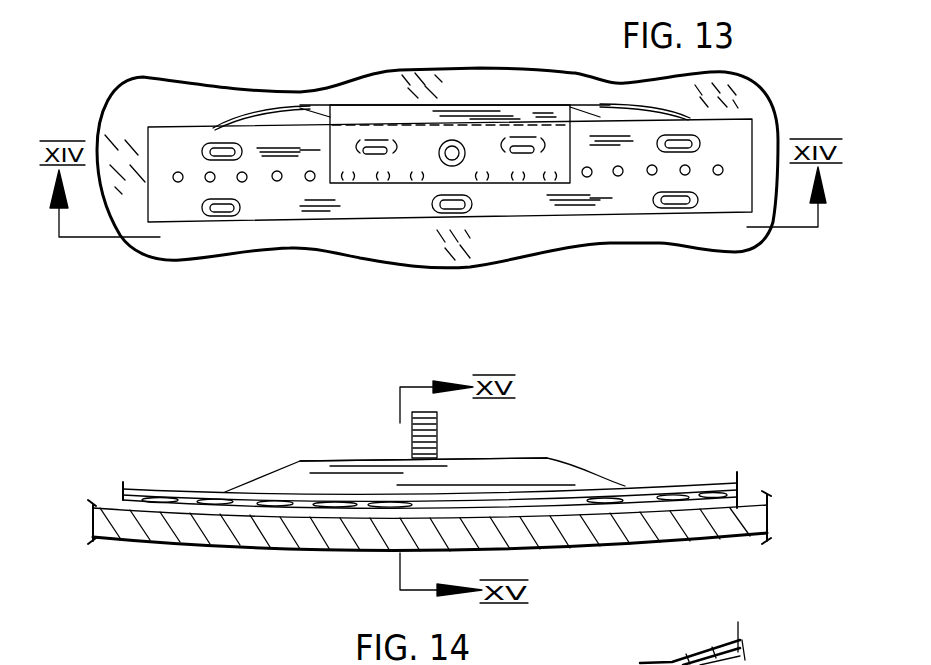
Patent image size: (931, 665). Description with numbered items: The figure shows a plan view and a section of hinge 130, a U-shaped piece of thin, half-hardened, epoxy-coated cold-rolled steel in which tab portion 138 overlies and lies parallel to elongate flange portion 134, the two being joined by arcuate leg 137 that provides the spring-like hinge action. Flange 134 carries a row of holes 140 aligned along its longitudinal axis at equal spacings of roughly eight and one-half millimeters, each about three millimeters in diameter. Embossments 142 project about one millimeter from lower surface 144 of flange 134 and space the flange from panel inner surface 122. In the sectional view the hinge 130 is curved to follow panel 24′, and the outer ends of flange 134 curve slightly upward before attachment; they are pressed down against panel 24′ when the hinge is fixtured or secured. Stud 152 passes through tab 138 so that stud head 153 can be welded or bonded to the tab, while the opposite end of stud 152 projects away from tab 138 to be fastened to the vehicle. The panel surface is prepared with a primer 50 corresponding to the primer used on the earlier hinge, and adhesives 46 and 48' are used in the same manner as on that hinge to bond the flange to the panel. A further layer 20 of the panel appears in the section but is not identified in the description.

In FIG. 13, the panel inner surface 122 is at (180, 100).
In FIG. 13, the hinge 130 is at (495, 60).
In FIG. 14, the hinge 130 is at (655, 400).
In FIG. 13, the elongate flange portion 134 is at (500, 220).
In FIG. 14, the elongate flange portion 134 is at (720, 477).
In FIG. 13, the leg 137 is at (368, 117).
In FIG. 14, the leg 137 is at (580, 478).
In FIG. 13, the tab portion 138 is at (367, 187).
In FIG. 14, the tab portion 138 is at (537, 455).
In FIG. 13, the holes 140 is at (277, 185).
In FIG. 13, the embossments 142 is at (205, 214).
In FIG. 14, the embossments 142 is at (203, 495).
In FIG. 14, the lower surface 144 is at (620, 483).
In FIG. 13, the stud 152 is at (443, 145).
In FIG. 14, the stud 152 is at (440, 437).
In FIG. 14, the stud head 153 is at (403, 457).
In FIG. 13, the panel 24′ is at (287, 252).
In FIG. 14, the panel 24′ is at (132, 545).
In FIG. 14, the core layer 20 is at (180, 547).
In FIG. 14, the adhesive 48' is at (476, 469).
In FIG. 14, the primer 50 is at (243, 550).
In FIG. 14, the adhesive 46 is at (312, 547).